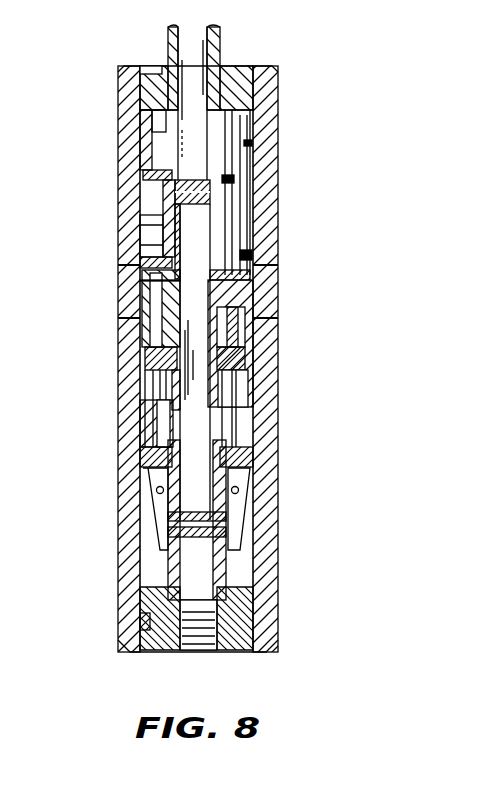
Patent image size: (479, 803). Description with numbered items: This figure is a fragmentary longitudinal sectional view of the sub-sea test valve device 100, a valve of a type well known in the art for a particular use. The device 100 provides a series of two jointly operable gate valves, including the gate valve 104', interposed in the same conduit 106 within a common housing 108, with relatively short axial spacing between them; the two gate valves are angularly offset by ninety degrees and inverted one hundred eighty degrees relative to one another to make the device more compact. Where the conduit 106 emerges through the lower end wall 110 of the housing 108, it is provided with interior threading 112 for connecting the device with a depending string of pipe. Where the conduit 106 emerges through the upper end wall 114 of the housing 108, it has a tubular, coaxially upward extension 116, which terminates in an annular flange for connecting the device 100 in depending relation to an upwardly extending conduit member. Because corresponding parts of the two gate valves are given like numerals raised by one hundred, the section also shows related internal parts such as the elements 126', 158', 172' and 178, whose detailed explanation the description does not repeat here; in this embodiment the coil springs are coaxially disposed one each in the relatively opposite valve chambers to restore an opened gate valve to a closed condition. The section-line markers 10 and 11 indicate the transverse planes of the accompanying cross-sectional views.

The device 100 is at (76, 594).
The gate valve 104' is at (138, 520).
The conduit 106 is at (204, 76).
The housing 108 is at (277, 413).
The lower end wall 110 is at (232, 653).
The interior threading 112 is at (190, 653).
The upper end wall 114 is at (238, 72).
The tubular extension 116 is at (168, 54).
The piston member 126' is at (198, 288).
The collet finger 158' is at (195, 509).
The retaining ring 172' is at (129, 523).
The drive rod 178 is at (277, 150).
The section line 10- 10 is at (70, 270).
The section line 11- 11 is at (70, 367).